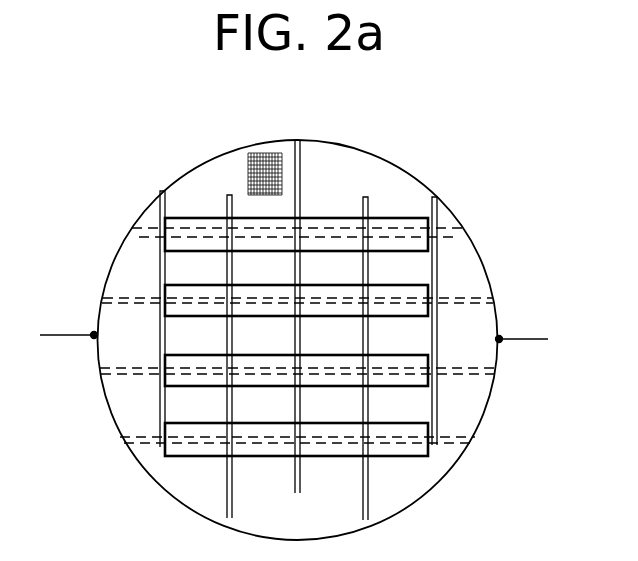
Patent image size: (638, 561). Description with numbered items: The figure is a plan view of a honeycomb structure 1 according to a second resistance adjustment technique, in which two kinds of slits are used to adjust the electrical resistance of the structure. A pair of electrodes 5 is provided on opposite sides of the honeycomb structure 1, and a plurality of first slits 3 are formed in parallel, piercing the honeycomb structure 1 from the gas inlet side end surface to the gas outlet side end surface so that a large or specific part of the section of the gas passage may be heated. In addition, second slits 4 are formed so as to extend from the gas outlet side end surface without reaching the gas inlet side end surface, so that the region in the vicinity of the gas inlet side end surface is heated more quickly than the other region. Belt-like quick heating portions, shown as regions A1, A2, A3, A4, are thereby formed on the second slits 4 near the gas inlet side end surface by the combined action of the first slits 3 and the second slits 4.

The honeycomb structure 1 is at (358, 173).
The first slits 3 is at (437, 210).
The second slit 4 is at (453, 437).
The electrodes 5 is at (80, 333).
The region A1 is at (393, 458).
The region A2 is at (162, 378).
The region A3 is at (433, 297).
The region A4 is at (165, 238).